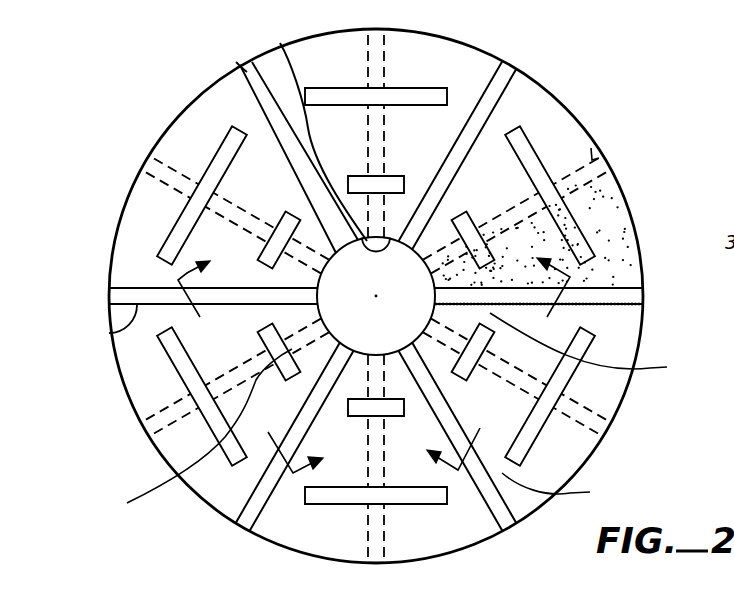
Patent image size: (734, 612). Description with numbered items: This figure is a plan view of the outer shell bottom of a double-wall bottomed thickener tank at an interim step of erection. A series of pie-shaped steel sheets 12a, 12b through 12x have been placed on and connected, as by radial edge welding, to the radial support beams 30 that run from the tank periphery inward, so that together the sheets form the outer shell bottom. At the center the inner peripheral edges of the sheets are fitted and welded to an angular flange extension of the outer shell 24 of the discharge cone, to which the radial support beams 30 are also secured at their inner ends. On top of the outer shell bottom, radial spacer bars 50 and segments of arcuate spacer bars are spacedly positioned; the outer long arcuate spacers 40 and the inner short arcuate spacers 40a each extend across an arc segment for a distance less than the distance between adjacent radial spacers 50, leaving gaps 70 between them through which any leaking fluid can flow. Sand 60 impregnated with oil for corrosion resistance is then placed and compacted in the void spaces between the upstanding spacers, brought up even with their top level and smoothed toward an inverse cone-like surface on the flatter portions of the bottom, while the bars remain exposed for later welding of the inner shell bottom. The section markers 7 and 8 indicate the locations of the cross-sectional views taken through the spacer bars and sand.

The tapered slot 24 is at (283, 47).
The fillet 50 is at (240, 63).
The sector segment 12x is at (195, 136).
The outer cross bar 40 is at (433, 88).
The radial shaft with inner bar 30 is at (392, 42).
The outer cross bar 40a is at (127, 503).
The sector segment 12a is at (480, 70).
The stippled sector segment 12b is at (622, 222).
The rim marker 60 is at (598, 134).
The curved line 70 is at (589, 408).
The section line 8 is at (260, 361).
The section line 7 is at (487, 358).